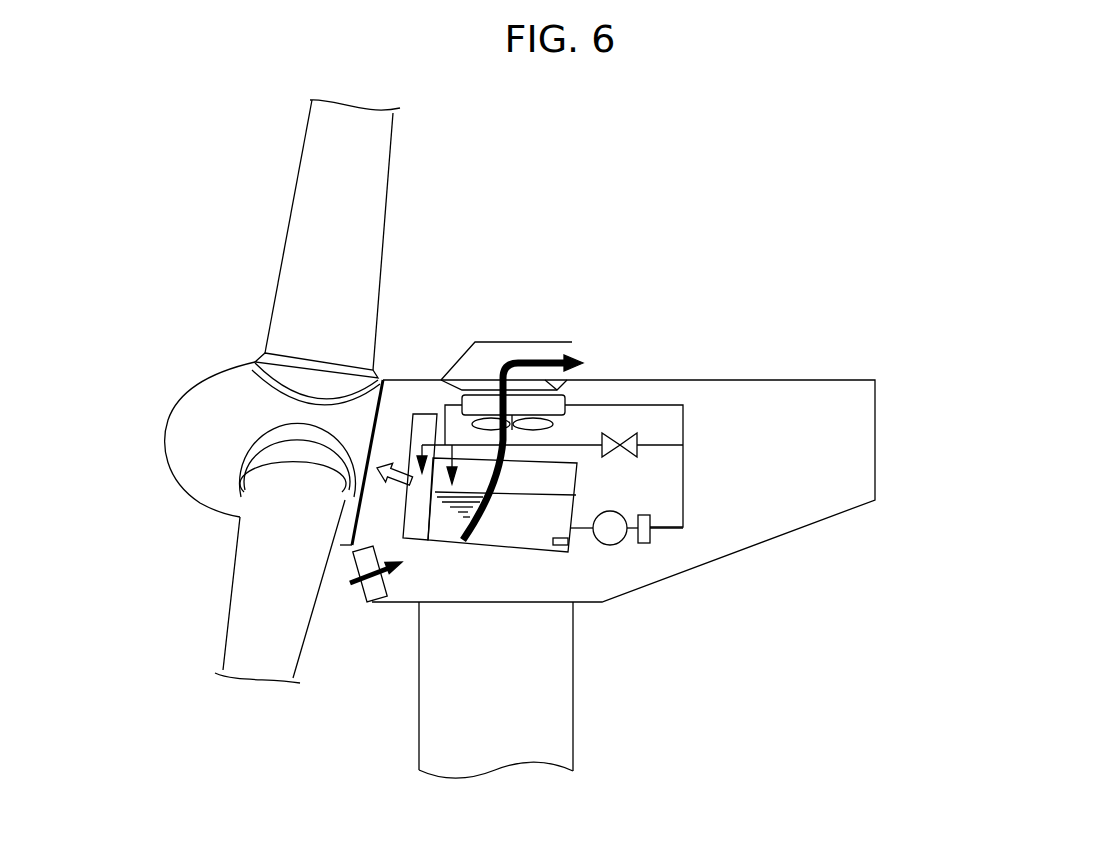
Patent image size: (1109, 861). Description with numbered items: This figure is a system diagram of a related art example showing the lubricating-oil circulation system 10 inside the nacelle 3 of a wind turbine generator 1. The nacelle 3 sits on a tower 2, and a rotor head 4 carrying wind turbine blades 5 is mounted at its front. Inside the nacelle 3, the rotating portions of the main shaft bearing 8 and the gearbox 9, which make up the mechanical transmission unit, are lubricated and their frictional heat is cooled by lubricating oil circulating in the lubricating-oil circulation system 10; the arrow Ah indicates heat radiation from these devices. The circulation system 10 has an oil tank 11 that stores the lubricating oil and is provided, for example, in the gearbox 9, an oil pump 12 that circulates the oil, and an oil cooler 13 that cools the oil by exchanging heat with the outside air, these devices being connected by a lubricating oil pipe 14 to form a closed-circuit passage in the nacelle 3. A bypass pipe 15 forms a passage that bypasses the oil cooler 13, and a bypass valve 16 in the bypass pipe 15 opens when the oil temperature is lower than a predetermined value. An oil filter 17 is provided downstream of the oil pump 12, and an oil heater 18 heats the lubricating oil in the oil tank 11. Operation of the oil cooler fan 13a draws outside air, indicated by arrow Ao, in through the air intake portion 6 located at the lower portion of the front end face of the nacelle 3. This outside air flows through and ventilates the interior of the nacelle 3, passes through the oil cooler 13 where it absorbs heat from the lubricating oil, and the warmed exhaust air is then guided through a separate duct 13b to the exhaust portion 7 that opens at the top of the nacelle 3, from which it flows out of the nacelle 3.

The wind turbine generator 1 is at (796, 192).
The tower 2 is at (574, 735).
The nacelle 3 is at (840, 530).
The rotor head 4 is at (167, 450).
The wind turbine blade 5 is at (388, 168).
The air intake portion 6 is at (368, 598).
The exhaust portion 7 is at (570, 346).
The main shaft bearing 8 is at (414, 412).
The gearbox 9 is at (452, 542).
The lubricating-oil circulation system 10 is at (699, 449).
The oil tank 11 is at (497, 552).
The oil pump 12 is at (614, 546).
The oil cooler 13 is at (482, 395).
The oil cooler fan 13a is at (558, 421).
The duct 13b is at (567, 390).
The lubricating oil pipe 14 is at (684, 492).
The bypass pipe 15 is at (661, 447).
The bypass valve 16 is at (609, 451).
The oil filter 17 is at (652, 541).
The oil heater 18 is at (566, 555).
The outside air Ao is at (400, 566).
The heat radiation Ah is at (383, 476).